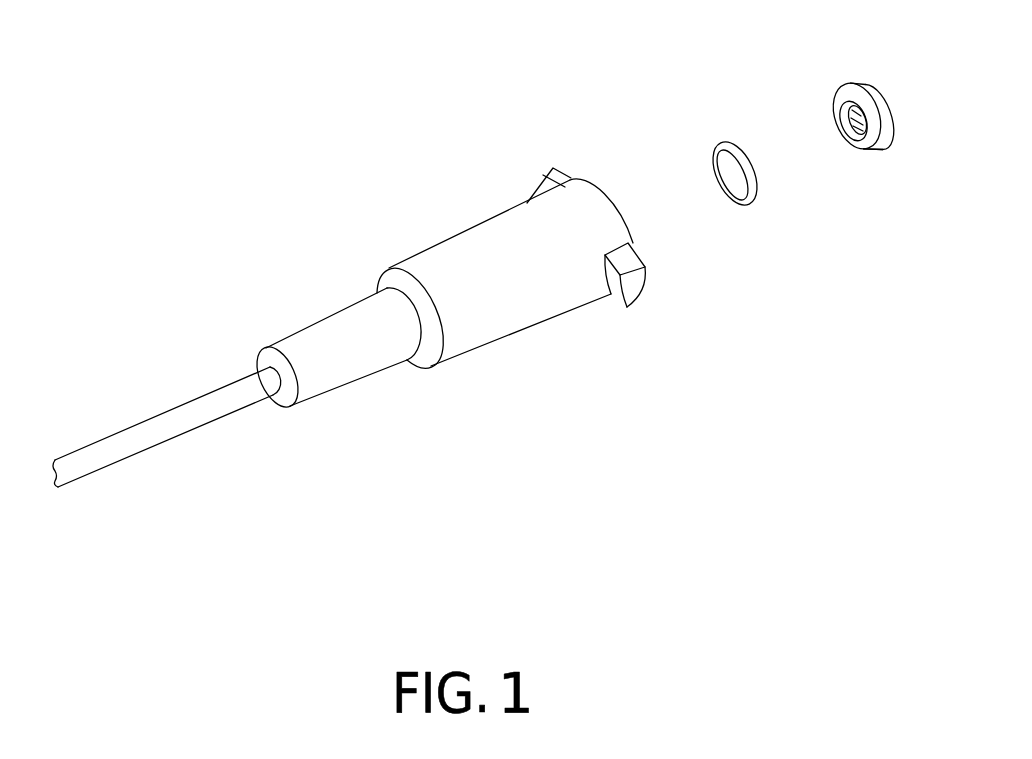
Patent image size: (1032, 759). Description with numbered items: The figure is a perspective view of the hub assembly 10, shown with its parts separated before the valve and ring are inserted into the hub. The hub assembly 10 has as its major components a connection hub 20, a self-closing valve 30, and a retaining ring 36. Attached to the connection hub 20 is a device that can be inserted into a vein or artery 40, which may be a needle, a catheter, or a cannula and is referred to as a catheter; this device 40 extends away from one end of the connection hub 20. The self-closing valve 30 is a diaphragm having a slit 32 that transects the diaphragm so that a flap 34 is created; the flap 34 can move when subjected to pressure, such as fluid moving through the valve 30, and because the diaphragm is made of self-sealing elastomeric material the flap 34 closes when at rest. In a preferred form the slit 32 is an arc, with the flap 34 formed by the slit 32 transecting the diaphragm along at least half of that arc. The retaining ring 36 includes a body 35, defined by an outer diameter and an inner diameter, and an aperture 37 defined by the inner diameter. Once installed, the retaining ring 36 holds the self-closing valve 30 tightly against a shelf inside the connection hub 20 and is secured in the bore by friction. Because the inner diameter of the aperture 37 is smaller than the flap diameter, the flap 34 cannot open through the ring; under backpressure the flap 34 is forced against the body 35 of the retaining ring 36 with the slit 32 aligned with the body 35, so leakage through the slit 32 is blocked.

The hub assembly 10 is at (417, 240).
The connection hub 20 is at (565, 317).
The self-closing valve 30 is at (727, 182).
The slit 32 is at (733, 156).
The flap 34 is at (735, 180).
The body 35 is at (838, 134).
The retaining ring 36 is at (867, 152).
The aperture 37 is at (843, 122).
The device that can be inserted into a vein or artery 40 is at (180, 403).